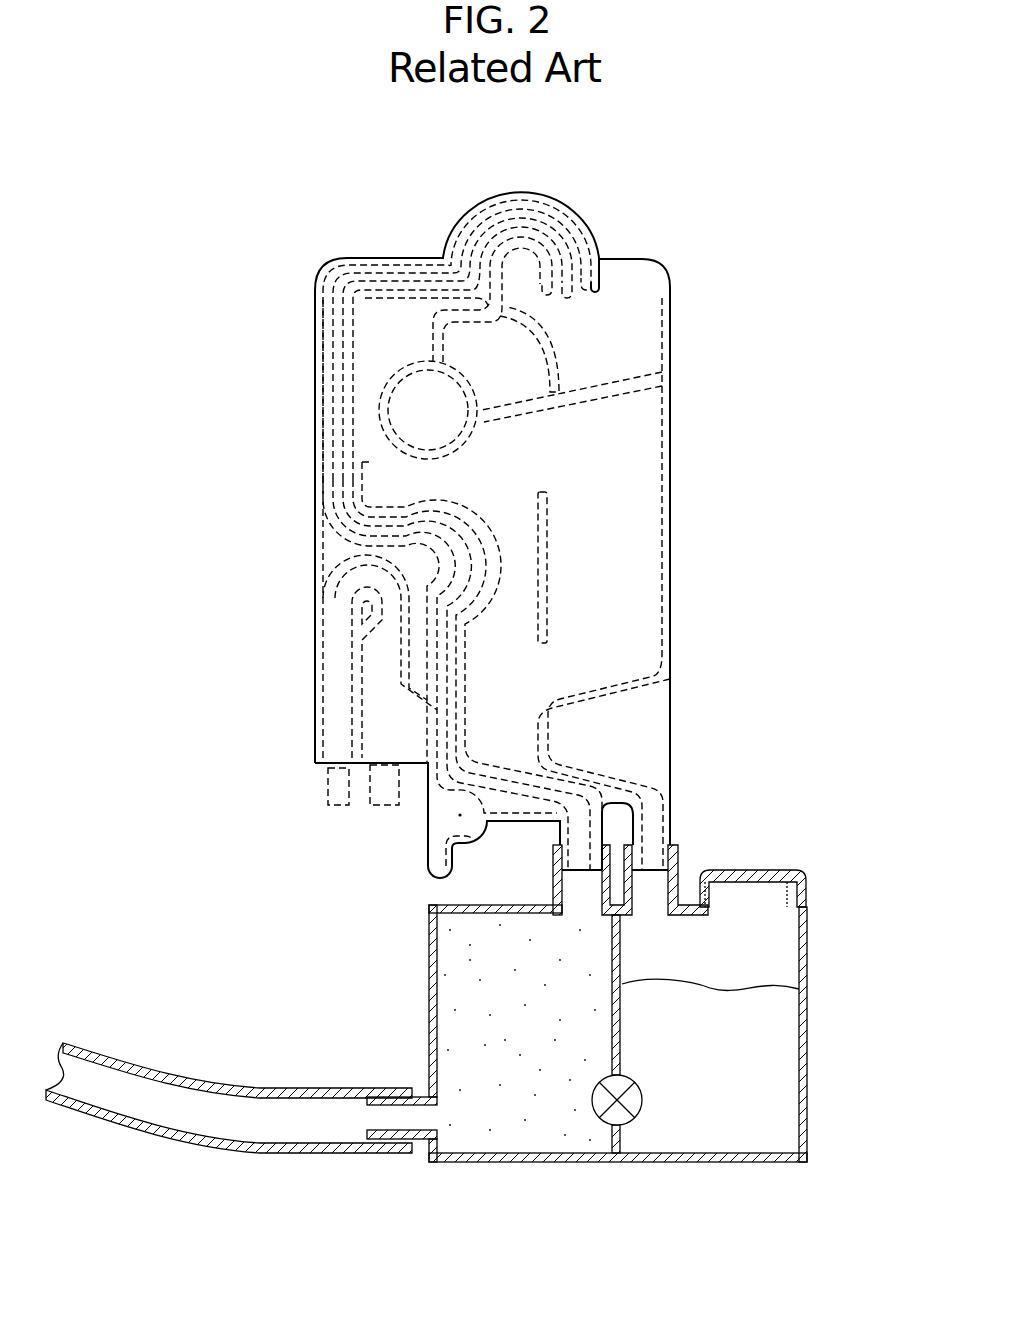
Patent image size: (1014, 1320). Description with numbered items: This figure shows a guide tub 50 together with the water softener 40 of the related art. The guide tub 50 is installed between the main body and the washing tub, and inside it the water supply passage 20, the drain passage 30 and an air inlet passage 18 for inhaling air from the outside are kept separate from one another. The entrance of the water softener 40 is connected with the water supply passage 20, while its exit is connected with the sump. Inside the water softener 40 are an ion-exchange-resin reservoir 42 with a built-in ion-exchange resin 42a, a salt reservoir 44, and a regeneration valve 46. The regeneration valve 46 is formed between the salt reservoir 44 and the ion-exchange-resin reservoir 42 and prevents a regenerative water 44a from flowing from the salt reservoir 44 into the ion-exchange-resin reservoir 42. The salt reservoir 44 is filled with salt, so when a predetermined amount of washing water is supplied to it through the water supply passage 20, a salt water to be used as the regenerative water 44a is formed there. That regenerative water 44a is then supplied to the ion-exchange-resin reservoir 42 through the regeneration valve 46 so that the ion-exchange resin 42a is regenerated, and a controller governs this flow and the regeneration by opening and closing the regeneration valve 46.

The air inlet passage 18 is at (632, 290).
The guide tub 50 is at (298, 377).
The drain passage 30 is at (342, 677).
The water supply passage 20 is at (452, 824).
The water softener 40 is at (471, 1019).
The ion-exchange-resin reservoir 42 is at (525, 1160).
The ion-exchange resin 42a is at (483, 1018).
The salt reservoir 44 is at (735, 1160).
The regenerative water 44a is at (770, 1060).
The regeneration valve 46 is at (634, 1112).